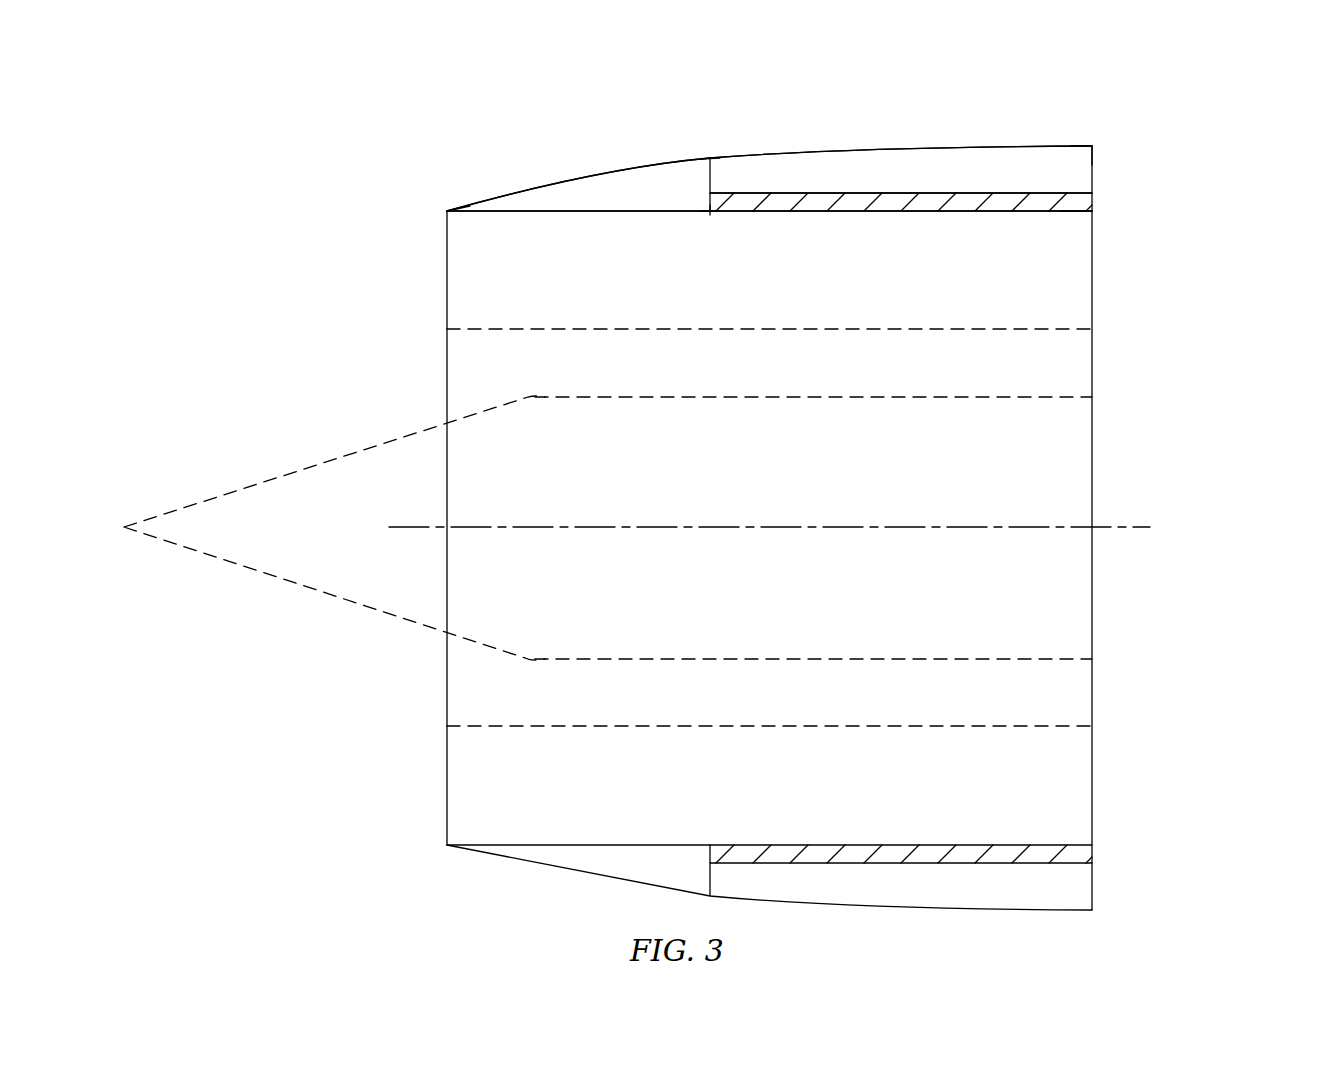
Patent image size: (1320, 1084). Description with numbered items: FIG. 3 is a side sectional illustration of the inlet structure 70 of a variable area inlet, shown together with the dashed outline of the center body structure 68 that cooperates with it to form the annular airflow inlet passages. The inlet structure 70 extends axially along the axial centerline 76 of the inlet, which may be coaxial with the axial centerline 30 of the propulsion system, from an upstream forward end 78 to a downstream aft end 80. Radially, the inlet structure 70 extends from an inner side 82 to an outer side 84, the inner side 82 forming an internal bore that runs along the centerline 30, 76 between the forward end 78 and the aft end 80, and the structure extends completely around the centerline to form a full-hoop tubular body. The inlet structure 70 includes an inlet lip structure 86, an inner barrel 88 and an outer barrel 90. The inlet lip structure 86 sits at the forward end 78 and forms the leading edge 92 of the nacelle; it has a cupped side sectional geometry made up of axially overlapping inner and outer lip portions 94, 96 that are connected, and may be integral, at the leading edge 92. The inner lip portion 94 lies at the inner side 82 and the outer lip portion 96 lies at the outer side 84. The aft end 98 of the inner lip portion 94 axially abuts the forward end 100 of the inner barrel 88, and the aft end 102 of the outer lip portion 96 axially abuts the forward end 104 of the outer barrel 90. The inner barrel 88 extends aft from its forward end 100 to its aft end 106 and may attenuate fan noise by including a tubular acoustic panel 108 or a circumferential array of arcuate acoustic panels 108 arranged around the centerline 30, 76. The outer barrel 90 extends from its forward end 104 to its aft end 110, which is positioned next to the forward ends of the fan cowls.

The inlet structure 70 is at (1214, 120).
The forward end 78 is at (447, 254).
The aft end 80 is at (1092, 268).
The leading edge 92 is at (447, 211).
The outer lip portion 96 is at (546, 186).
The inlet lip structure 86 is at (588, 176).
The inner lip portion 94 is at (560, 213).
The forward end of the outer barrel 104 is at (710, 158).
The aft end of the outer lip portion 102 is at (710, 158).
The forward end of the inner barrel 100 is at (710, 211).
The aft end of the inner lip portion 98 is at (710, 211).
The outer side 84 is at (840, 150).
The outer barrel 90 is at (958, 147).
The aft end of the outer barrel 110 is at (1092, 146).
The inner side 82 is at (815, 212).
The inner barrel 88 is at (918, 217).
The acoustic panel 108 is at (1008, 217).
The aft end of the inner barrel 106 is at (1092, 211).
The axial centerline 30 is at (790, 575).
The axial centerline 76 is at (1140, 532).
The center body structure 68 is at (329, 600).